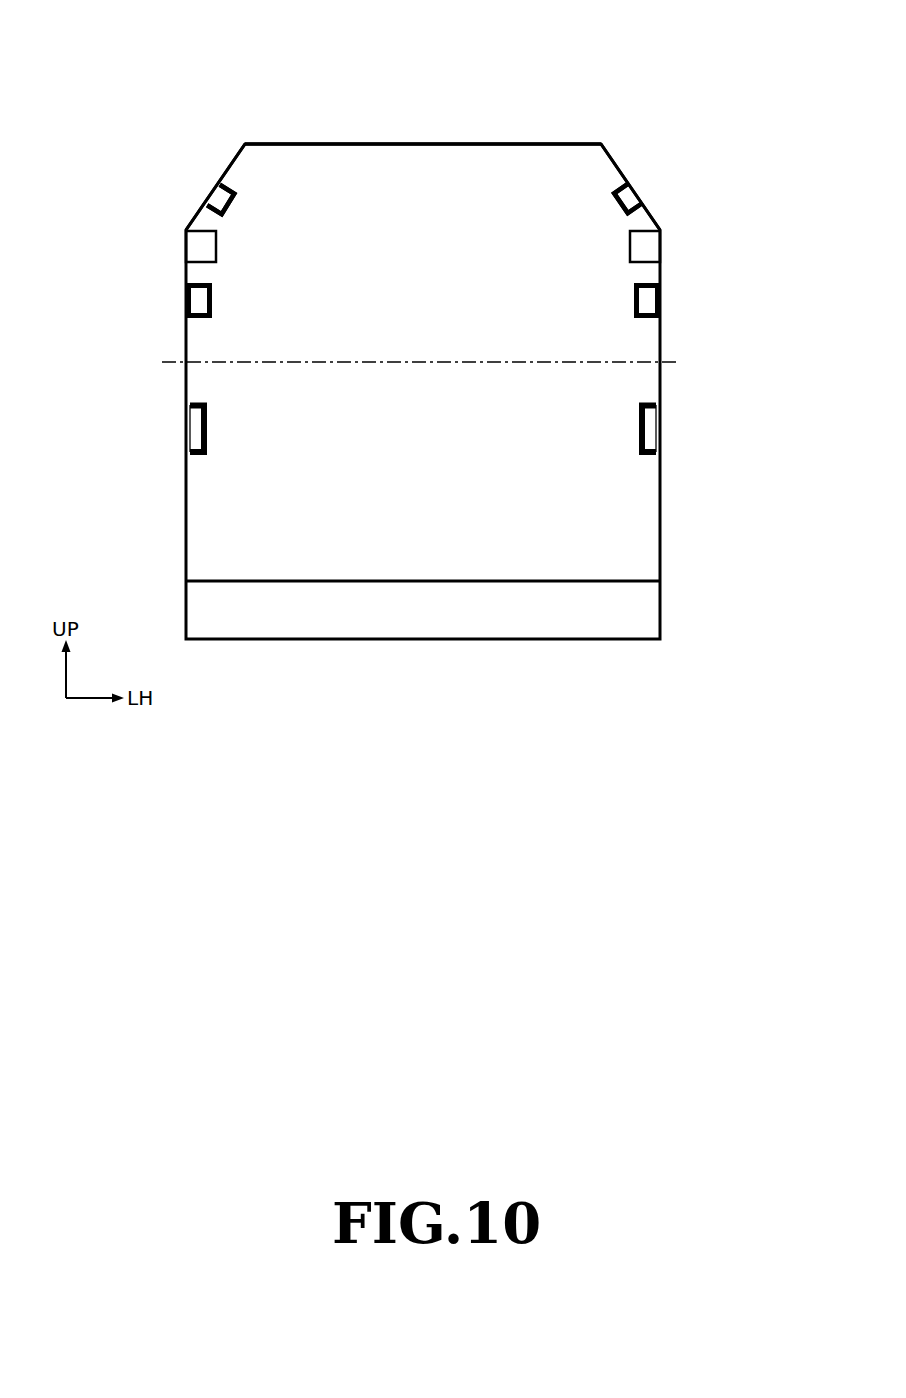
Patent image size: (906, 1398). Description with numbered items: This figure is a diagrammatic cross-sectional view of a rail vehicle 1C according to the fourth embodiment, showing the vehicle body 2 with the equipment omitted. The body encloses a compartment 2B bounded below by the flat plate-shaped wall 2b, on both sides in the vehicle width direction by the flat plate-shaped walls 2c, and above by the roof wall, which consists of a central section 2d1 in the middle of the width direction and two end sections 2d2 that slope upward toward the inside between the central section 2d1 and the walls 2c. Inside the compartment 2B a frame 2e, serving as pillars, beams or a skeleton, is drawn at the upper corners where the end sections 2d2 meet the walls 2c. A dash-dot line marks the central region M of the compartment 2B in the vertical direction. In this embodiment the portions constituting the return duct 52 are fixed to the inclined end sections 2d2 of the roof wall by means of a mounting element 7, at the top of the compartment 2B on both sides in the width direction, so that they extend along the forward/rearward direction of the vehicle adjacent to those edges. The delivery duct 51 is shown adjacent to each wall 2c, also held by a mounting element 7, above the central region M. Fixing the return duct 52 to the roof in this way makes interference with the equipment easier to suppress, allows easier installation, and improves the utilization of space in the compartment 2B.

The rail vehicle 1C is at (578, 54).
The vehicle body 2 is at (503, 136).
The compartment 2B is at (433, 158).
The central section 2d1 is at (321, 142).
The end section 2d2 is at (236, 156).
The frame 2e is at (192, 230).
The mounting element 7 is at (224, 176).
The delivery duct 51 is at (224, 312).
The return duct 52 is at (248, 208).
The wall 2c is at (186, 465).
The wall 2b is at (423, 582).
The central region M is at (399, 365).